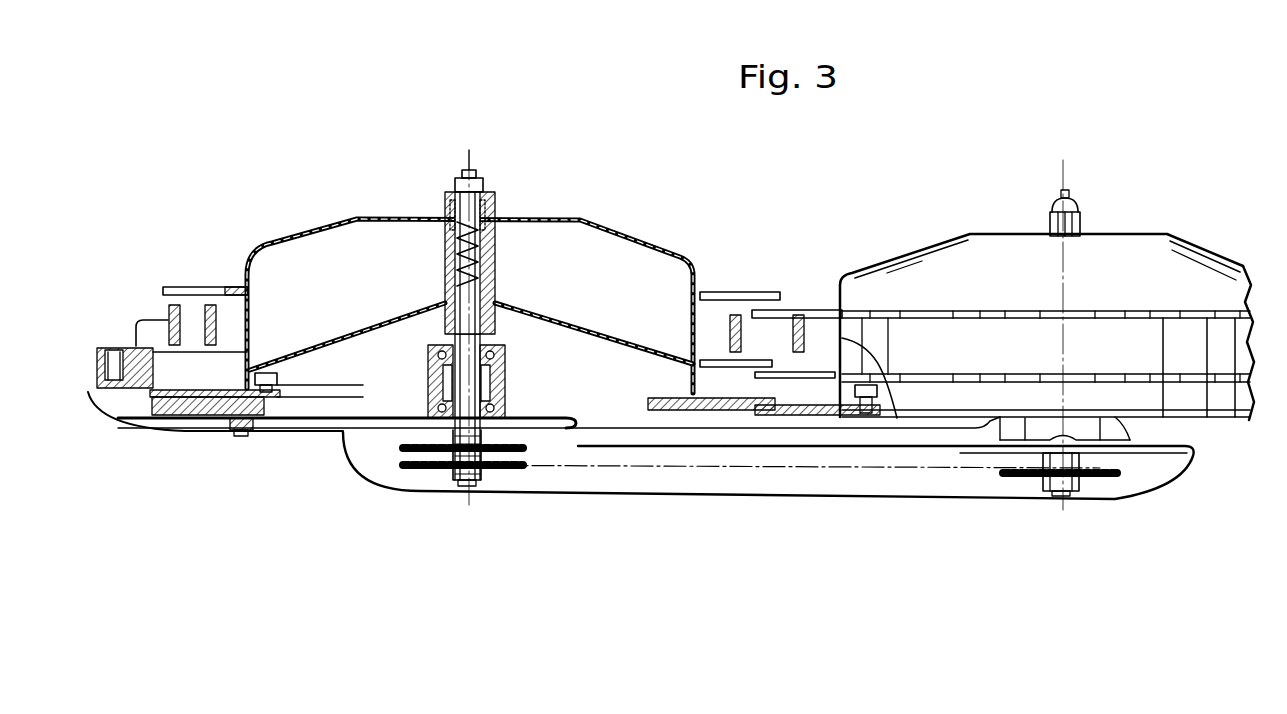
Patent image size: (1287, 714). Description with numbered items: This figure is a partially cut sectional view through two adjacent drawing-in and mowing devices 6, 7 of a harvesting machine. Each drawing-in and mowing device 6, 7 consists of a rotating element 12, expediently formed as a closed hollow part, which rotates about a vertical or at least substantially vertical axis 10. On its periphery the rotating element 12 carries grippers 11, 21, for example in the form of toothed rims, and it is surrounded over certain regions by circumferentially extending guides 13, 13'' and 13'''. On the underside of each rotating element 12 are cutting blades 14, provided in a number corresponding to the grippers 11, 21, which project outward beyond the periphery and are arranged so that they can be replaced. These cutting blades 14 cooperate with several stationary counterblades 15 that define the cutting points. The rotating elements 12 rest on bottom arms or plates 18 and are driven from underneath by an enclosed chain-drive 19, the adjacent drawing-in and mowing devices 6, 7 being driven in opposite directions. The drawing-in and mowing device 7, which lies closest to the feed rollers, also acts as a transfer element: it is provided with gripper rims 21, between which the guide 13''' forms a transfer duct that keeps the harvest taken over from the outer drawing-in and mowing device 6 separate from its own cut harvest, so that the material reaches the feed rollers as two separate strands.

The drawing-in and mowing device 6 is at (362, 172).
The drawing-in and mowing device 7 is at (1005, 190).
The vertical axis 10 is at (473, 167).
The grippers 11 is at (773, 292).
The rotating element 12 is at (672, 252).
The guide 13 is at (205, 293).
The guide 13'' is at (480, 304).
The guide 13''' is at (748, 296).
The cutting blades 14 is at (158, 416).
The stationary counterblades 15 is at (219, 416).
The bottom arms or plates 18 is at (311, 431).
The enclosed chain-drive 19 is at (556, 470).
The gripper rims 21 is at (828, 306).